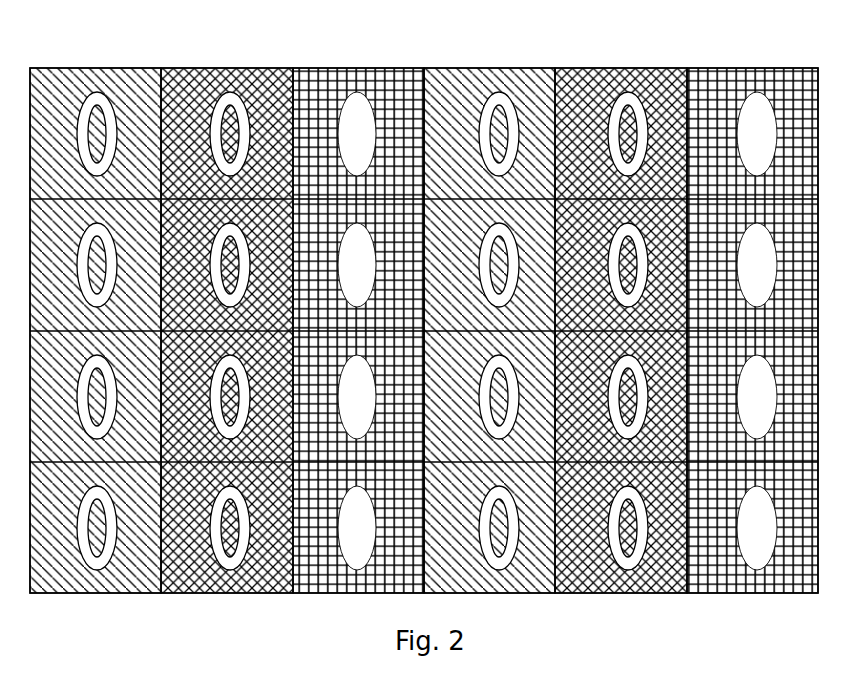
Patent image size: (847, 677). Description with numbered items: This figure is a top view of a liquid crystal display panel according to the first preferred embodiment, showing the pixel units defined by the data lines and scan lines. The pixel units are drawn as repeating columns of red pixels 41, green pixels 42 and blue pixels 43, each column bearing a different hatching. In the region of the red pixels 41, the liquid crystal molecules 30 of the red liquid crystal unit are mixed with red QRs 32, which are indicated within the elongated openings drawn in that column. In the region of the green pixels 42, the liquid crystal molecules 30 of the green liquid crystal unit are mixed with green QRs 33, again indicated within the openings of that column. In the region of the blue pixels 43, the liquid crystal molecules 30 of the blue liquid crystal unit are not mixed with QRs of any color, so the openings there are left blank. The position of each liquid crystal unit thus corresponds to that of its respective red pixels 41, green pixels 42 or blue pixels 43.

The liquid crystal molecules 30 is at (357, 90).
The red QRs 32 is at (97, 107).
The green QRs 33 is at (230, 107).
The red pixels 41 is at (62, 68).
The green pixels 42 is at (187, 68).
The blue pixels 43 is at (327, 68).